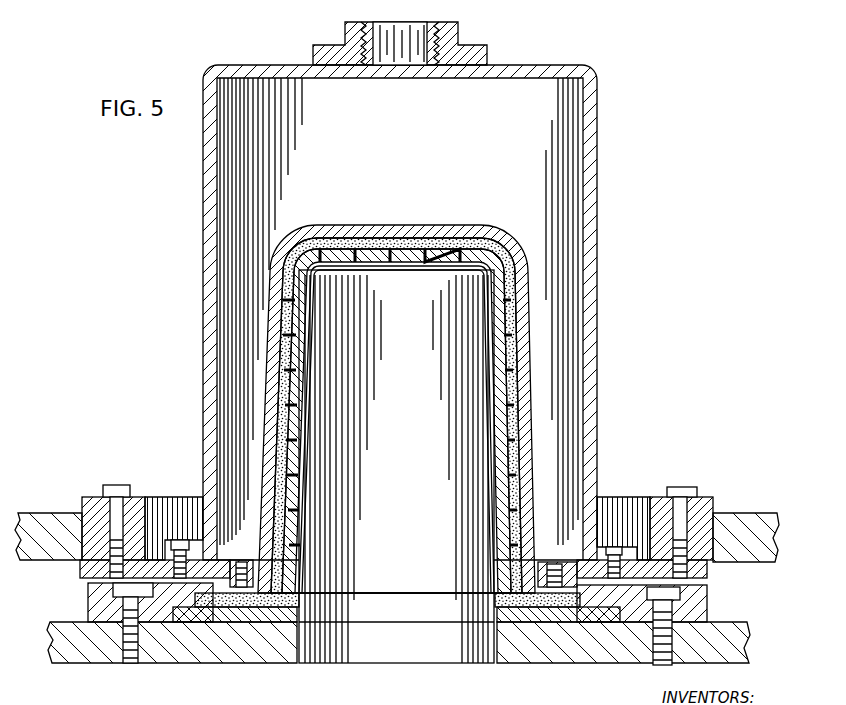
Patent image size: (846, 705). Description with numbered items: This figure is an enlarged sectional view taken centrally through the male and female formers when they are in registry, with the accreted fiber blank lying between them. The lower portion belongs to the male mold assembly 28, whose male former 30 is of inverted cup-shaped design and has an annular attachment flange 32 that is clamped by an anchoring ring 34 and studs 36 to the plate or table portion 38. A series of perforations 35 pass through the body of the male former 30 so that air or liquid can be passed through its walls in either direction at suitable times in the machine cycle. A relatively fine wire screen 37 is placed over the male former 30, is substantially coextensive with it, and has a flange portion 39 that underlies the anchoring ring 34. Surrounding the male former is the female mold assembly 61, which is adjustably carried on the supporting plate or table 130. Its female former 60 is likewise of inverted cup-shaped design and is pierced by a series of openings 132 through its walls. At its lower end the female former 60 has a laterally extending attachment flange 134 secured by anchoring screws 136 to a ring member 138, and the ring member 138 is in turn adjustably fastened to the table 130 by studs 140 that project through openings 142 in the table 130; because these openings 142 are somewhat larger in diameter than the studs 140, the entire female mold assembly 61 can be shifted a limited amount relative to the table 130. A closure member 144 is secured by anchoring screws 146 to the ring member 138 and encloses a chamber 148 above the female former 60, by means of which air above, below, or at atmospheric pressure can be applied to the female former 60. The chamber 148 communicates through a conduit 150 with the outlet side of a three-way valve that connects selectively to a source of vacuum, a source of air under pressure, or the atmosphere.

The conduit 150 is at (432, 30).
The closure member 144 is at (598, 108).
The female mold assembly 61 is at (406, 143).
The chamber 148 is at (306, 179).
The female former 60 is at (366, 226).
The openings 132 is at (450, 226).
The wire screen 37 is at (530, 286).
The male former 30 is at (518, 372).
The perforations 35 is at (274, 306).
The male mold assembly 28 is at (406, 654).
The flange portion 39 is at (245, 608).
The annular attachment flange 32 is at (226, 618).
The plate or table portion 38 is at (270, 650).
The anchoring ring 34 is at (88, 600).
The studs 36 is at (132, 665).
The supporting plate or table 130 is at (742, 520).
The openings 142 is at (84, 498).
The ring member 138 is at (142, 560).
The studs 140 is at (108, 486).
The anchoring screws 146 is at (178, 545).
The attachment flange 134 is at (246, 560).
The anchoring screws 136 is at (238, 560).